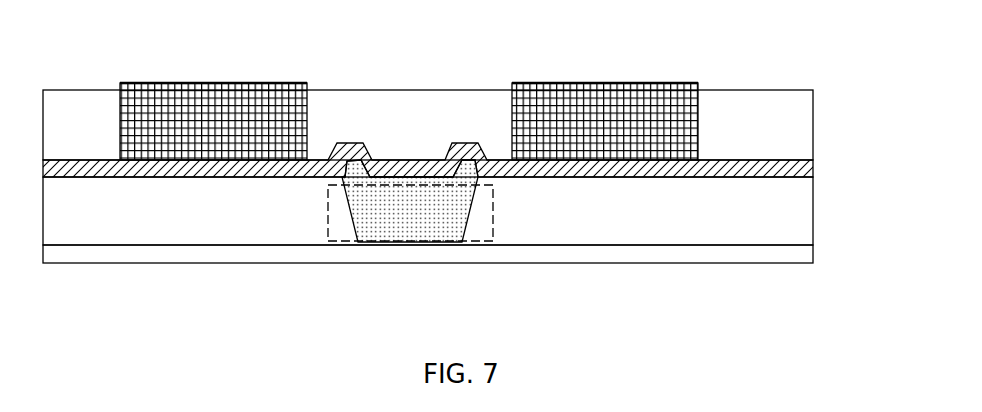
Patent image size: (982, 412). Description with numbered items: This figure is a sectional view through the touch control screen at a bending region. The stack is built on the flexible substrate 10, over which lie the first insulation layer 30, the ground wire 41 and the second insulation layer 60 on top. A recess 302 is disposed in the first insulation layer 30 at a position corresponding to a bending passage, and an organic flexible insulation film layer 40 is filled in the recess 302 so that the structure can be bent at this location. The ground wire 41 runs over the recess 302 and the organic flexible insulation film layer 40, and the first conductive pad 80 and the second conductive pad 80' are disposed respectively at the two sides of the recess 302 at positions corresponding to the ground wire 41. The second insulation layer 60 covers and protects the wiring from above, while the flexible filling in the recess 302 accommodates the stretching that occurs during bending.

The flexible substrate 10 is at (802, 252).
The first insulation layer 30 is at (802, 208).
The recess 302 is at (493, 214).
The organic flexible insulation film layer 40 is at (420, 220).
The ground wire 41 is at (802, 169).
The second insulation layer 60 is at (802, 123).
The first conductive pad 80 is at (213, 87).
The second conductive pad 80' is at (605, 88).